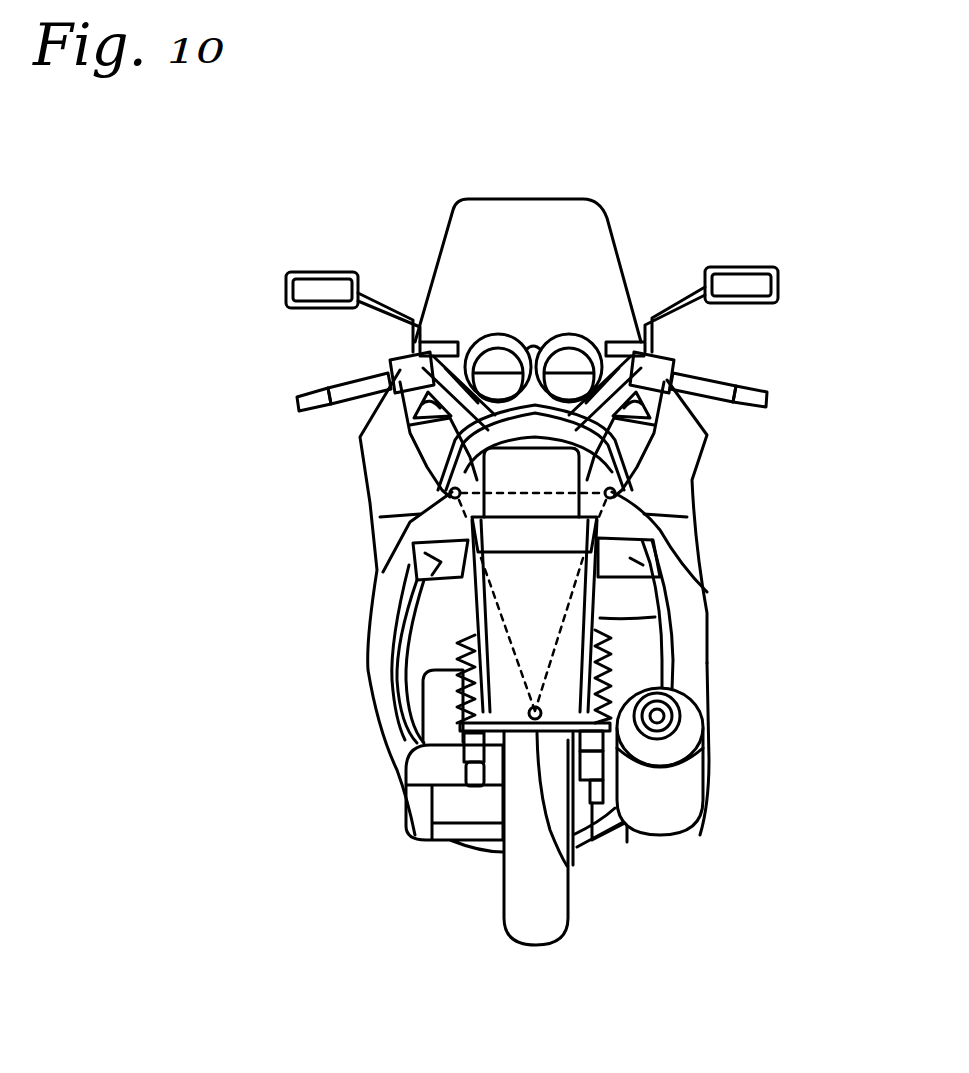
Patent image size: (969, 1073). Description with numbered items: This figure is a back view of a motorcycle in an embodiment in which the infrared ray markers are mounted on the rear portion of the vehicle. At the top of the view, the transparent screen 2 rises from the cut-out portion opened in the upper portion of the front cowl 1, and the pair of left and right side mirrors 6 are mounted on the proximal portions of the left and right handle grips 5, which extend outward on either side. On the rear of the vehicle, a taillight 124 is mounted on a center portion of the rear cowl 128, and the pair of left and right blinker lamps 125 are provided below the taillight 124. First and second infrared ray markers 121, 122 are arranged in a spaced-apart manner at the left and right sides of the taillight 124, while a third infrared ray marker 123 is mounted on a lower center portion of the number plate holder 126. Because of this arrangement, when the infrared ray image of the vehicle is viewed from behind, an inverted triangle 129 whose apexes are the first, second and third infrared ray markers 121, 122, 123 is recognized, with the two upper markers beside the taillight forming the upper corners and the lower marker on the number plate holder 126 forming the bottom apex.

The front cowl 1 is at (718, 477).
The transparent screen 2 is at (615, 232).
The handle grips 5 is at (535, 386).
The side mirrors 6 is at (534, 277).
The first infrared ray marker 121 is at (452, 496).
The second infrared ray marker 122 is at (614, 490).
The third infrared ray marker 123 is at (567, 866).
The taillight 124 is at (632, 563).
The blinker lamps 125 is at (532, 640).
The number plate holder 126 is at (552, 652).
The rear cowl 128 is at (366, 549).
The inverted triangle 129 is at (503, 624).